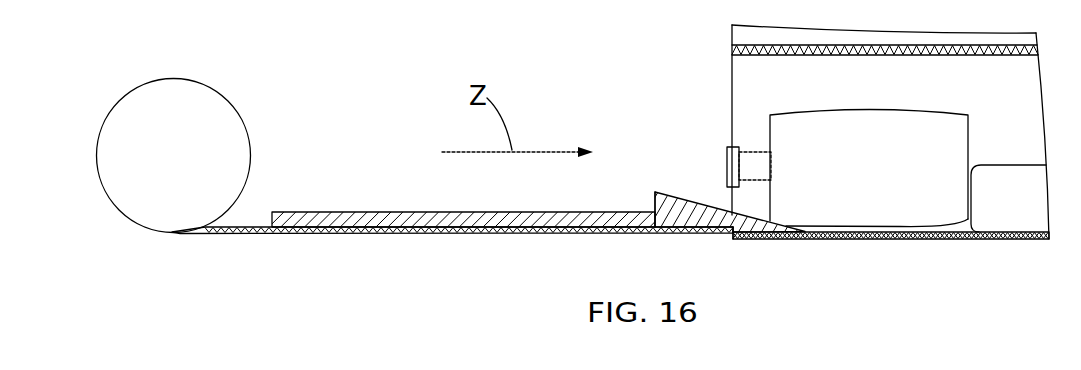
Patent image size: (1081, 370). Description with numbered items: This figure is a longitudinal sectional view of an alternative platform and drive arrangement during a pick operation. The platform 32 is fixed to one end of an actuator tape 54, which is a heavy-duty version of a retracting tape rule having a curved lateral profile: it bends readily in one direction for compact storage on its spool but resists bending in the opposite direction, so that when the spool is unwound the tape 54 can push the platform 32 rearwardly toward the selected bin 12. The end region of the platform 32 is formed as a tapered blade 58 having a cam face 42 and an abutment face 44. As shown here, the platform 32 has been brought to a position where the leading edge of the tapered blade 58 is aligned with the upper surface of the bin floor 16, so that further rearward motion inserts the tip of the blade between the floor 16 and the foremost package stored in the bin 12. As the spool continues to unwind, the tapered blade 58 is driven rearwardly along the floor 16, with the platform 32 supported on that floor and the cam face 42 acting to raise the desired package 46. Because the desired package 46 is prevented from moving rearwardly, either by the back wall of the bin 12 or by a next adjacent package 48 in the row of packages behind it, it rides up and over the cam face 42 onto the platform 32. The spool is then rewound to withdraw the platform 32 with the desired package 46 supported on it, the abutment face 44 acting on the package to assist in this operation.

The bin 12 is at (877, 94).
The bin floor 16 is at (938, 240).
The platform 32 is at (511, 229).
The cam face 42 is at (688, 190).
The abutment face 44 is at (643, 205).
The desired package 46 is at (877, 197).
The inner component 48 is at (1000, 193).
The actuator tape 54 is at (261, 230).
The tapered blade 58 is at (733, 234).